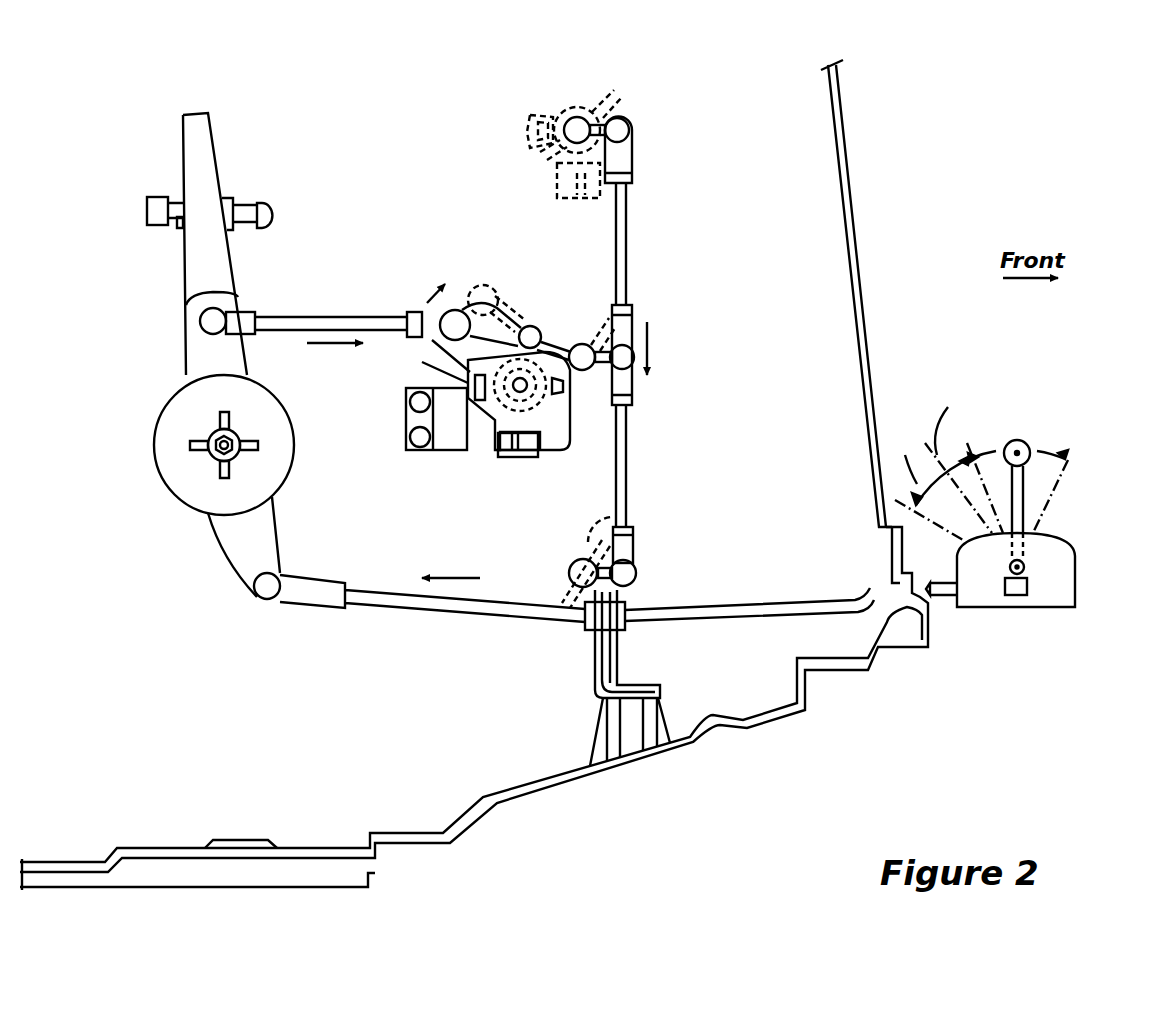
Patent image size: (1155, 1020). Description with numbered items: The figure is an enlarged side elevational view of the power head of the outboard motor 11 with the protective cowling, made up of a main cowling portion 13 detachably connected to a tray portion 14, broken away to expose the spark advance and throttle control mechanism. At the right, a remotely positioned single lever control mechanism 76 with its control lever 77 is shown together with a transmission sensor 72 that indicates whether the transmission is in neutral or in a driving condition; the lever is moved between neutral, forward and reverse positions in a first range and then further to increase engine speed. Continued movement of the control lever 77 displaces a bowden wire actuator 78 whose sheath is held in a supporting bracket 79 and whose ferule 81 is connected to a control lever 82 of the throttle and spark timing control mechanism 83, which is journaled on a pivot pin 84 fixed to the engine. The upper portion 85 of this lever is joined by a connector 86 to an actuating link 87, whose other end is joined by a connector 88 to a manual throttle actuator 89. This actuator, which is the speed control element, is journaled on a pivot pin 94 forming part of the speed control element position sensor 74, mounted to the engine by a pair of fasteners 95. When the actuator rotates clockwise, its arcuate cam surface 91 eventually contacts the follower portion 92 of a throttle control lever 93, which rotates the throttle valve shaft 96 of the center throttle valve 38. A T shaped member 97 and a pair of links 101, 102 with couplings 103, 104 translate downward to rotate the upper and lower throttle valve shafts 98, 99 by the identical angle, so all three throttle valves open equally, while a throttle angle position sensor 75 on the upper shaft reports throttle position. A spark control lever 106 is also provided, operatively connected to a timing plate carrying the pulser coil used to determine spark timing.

The outboard motor 11 is at (930, 106).
The main cowling portion 13 is at (852, 210).
The tray portion 14 is at (930, 633).
The throttle valve 38 is at (600, 95).
The transmission sensor 72 is at (1013, 595).
The speed control element position sensor 74 is at (507, 422).
The throttle angle position sensor 75 is at (550, 107).
The single lever control mechanism 76 is at (970, 364).
The control lever 77 is at (1027, 490).
The bowden wire actuator 78 is at (745, 605).
The supporting bracket 79 is at (602, 693).
The ferule 81 is at (307, 573).
The control lever 82 is at (240, 550).
The throttle and spark timing control mechanism 83 is at (143, 464).
The pivot pin 84 is at (218, 453).
The upper portion 85 is at (197, 352).
The connector 86 is at (213, 318).
The actuating link 87 is at (327, 313).
The connector 88 is at (430, 328).
The manual throttle actuator 89 is at (457, 303).
The arcuate cam surface 91 is at (502, 305).
The follower portion 92 is at (523, 367).
The throttle control lever 93 is at (577, 347).
The pivot pin 94 is at (520, 393).
The fasteners 95 is at (407, 437).
The throttle valve shaft 96 is at (582, 340).
The T shaped member 97 is at (632, 320).
The throttle valve shaft 98 is at (570, 108).
The throttle valve shaft 99 is at (568, 560).
The link 101 is at (628, 232).
The link 102 is at (628, 460).
The coupling 103 is at (632, 158).
The coupling 104 is at (635, 553).
The spark control lever 106 is at (187, 133).